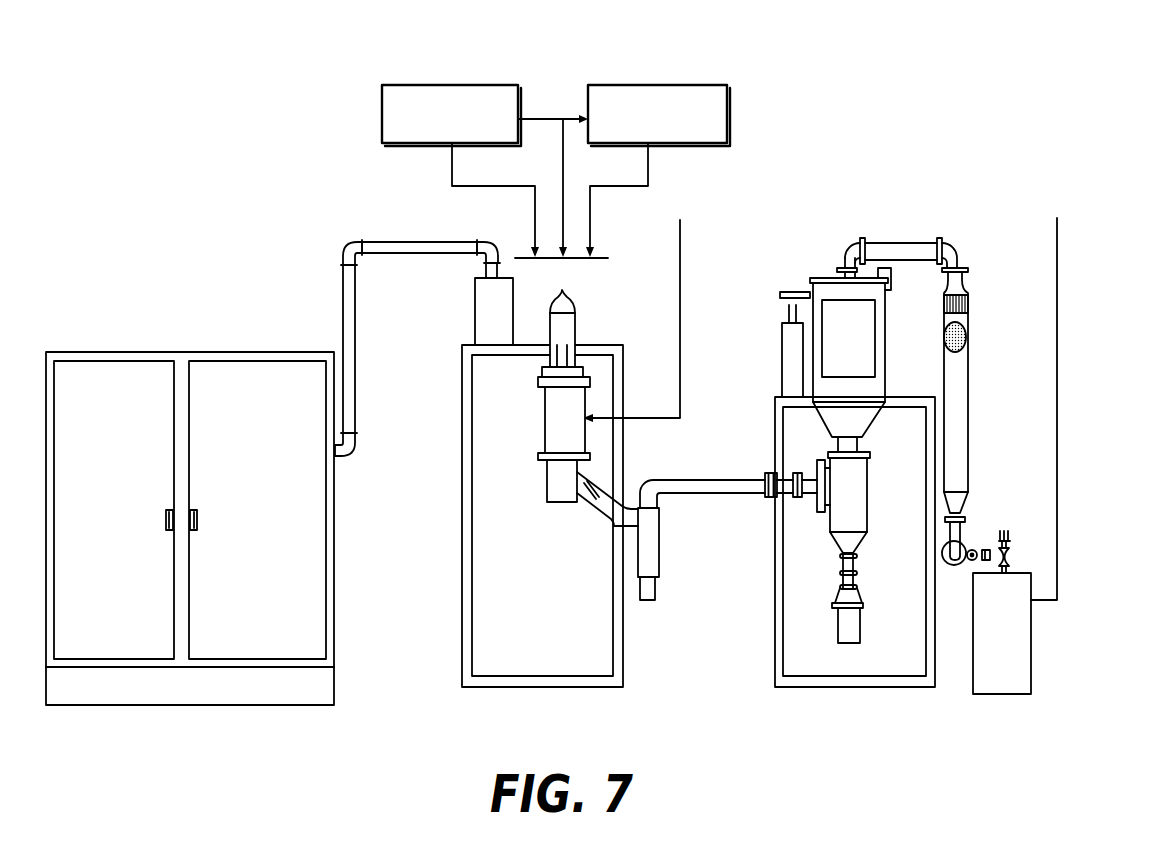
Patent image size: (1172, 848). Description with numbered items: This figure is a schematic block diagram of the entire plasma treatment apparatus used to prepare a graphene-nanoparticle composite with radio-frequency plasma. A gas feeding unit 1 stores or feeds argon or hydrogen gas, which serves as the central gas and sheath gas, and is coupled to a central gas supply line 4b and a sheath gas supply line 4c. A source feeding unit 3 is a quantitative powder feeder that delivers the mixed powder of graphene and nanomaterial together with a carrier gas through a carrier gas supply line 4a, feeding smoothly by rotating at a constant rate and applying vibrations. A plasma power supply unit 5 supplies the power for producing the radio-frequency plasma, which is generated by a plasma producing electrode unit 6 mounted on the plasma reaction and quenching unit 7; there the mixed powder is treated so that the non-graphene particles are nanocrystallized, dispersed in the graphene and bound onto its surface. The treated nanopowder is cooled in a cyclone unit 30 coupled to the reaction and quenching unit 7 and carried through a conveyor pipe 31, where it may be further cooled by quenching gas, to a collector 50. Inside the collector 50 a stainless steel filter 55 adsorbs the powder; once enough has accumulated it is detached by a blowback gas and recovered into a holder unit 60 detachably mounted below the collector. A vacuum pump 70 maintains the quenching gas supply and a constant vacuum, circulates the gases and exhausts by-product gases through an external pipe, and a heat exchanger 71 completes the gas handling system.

The gas feeding unit 1 is at (382, 116).
The source feeding unit 3 is at (727, 117).
The carrier gas supply line 4a is at (650, 162).
The central gas supply line 4b is at (563, 148).
The sheath gas supply line 4c is at (452, 162).
The plasma power supply unit 5 is at (262, 407).
The plasma producing electrode unit 6 is at (590, 350).
The plasma reaction and quenching unit 7 is at (543, 417).
The cyclone unit 30 is at (659, 547).
The conveyor pipe 31 is at (723, 493).
The collector 50 is at (904, 455).
The filter 55 is at (835, 298).
The holder unit 60 is at (835, 627).
The vacuum pump 70 is at (1017, 648).
The heat exchanger 71 is at (953, 394).